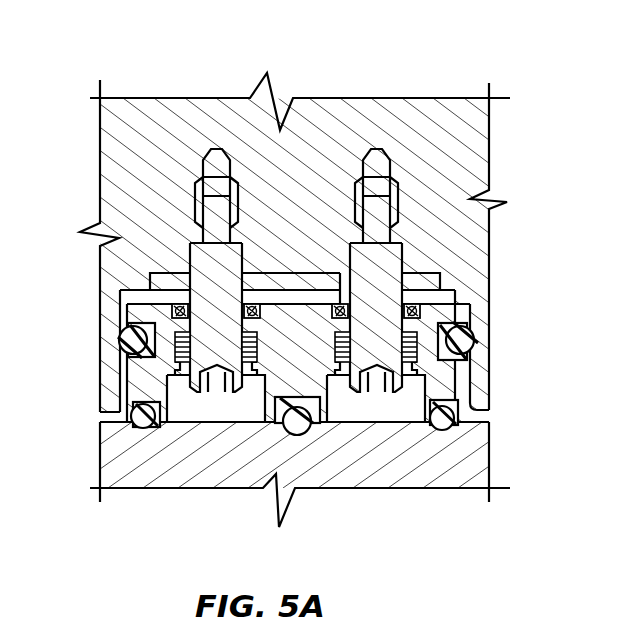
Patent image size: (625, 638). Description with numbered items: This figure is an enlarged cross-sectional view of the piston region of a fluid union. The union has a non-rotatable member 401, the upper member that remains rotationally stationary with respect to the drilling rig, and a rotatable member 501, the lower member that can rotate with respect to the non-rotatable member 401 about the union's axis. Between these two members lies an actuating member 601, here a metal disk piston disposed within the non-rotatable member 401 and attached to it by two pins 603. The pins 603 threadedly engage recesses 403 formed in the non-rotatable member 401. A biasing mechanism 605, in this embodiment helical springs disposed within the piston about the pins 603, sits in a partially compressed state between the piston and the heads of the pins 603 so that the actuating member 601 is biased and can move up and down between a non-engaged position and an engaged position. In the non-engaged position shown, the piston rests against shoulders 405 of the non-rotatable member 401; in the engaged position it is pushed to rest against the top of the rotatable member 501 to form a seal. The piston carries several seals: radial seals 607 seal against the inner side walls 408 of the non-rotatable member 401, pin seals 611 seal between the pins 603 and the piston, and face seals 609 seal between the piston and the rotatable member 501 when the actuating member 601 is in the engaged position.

The non-rotatable member 401 is at (368, 110).
The recesses 403 is at (220, 165).
The shoulders 405 is at (140, 312).
The inner side walls 408 is at (100, 366).
The rotatable member 501 is at (470, 470).
The actuating member 601 is at (455, 297).
The pins 603 is at (390, 250).
The biasing mechanism 605 is at (413, 363).
The radial seals 607 is at (477, 340).
The face seals 609 is at (440, 420).
The pin seals 611 is at (183, 303).